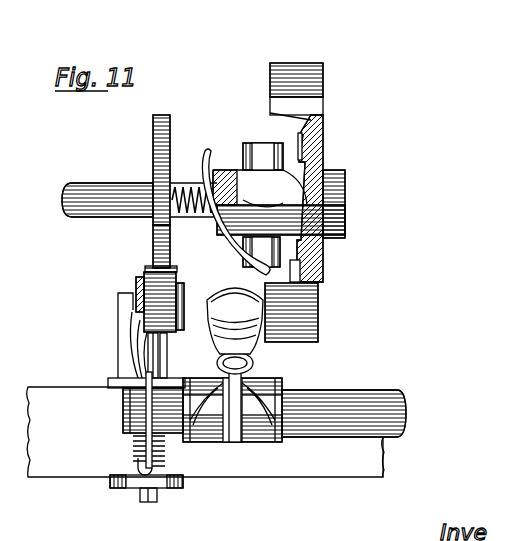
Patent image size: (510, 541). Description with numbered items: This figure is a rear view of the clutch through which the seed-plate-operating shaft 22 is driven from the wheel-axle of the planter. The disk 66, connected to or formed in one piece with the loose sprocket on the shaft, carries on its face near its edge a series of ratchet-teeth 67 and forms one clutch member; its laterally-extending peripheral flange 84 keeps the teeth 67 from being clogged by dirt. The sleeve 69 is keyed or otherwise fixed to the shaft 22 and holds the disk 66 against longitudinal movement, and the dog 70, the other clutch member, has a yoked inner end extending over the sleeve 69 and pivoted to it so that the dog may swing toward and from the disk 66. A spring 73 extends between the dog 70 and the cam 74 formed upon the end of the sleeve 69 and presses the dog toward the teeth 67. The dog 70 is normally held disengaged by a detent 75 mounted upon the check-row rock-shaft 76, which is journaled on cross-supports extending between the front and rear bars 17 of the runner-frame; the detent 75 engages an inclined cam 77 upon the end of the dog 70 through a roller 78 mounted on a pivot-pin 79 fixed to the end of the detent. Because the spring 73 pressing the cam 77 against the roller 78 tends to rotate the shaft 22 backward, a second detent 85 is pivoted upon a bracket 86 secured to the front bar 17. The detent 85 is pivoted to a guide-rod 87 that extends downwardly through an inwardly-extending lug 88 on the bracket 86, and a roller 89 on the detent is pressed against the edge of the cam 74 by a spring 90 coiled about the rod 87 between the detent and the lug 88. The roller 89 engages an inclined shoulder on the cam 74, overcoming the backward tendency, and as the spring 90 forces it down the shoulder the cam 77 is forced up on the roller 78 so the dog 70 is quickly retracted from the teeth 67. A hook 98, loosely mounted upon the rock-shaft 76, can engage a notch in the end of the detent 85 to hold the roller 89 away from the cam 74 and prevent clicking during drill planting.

The front bar of the runner-frame 17 is at (205, 432).
The seed-plate-operating shaft 22 is at (98, 205).
The disk 66 is at (326, 92).
The ratchet-teeth 67 is at (322, 142).
The sleeve 69 is at (180, 176).
The dog 70 is at (263, 177).
The spring 73 is at (168, 233).
The cam 74 is at (160, 135).
The detent 75 is at (255, 379).
The check-row rock-shaft 76 is at (352, 405).
The inclined cam 77 is at (226, 240).
The roller 78 is at (235, 321).
The pivot-pin 79 is at (242, 366).
The peripheral flange 84 is at (272, 63).
The detent 85 is at (138, 279).
The bracket 86 is at (125, 341).
The guide-rod 87 is at (148, 496).
The lug 88 is at (118, 481).
The roller 89 is at (143, 322).
The spring 90 is at (165, 466).
The hook 98 is at (136, 470).